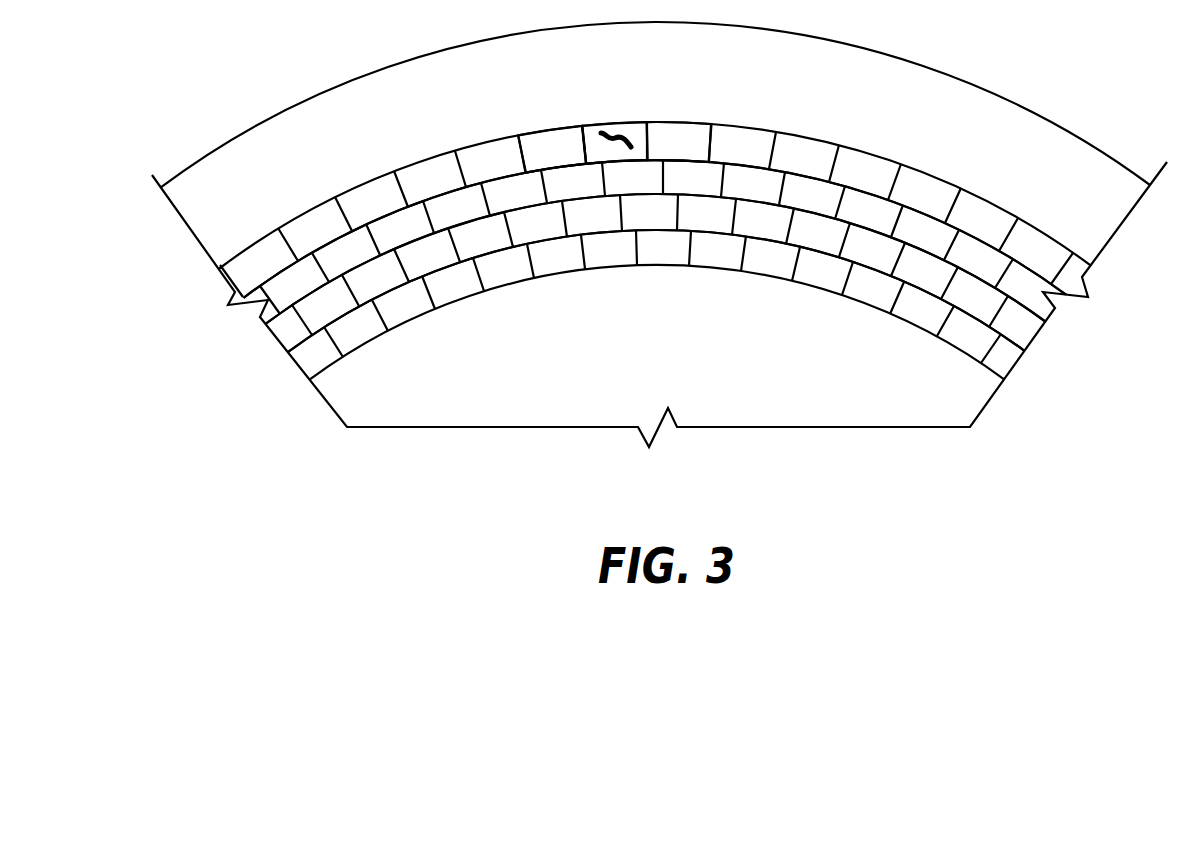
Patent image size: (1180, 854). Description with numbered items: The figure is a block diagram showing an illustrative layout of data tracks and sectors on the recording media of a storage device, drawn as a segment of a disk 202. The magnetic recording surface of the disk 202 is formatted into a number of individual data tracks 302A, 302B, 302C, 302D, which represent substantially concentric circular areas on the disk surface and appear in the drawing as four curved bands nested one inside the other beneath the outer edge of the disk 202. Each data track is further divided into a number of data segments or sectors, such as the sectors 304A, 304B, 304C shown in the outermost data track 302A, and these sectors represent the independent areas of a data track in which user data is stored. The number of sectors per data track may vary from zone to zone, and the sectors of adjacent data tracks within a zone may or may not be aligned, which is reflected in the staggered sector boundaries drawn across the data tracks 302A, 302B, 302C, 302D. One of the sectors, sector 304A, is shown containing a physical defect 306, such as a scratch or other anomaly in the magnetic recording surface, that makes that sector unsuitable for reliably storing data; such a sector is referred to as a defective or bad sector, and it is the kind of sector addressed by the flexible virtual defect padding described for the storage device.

The disk 202 is at (700, 74).
The data track 302A is at (1102, 283).
The data track 302B is at (1075, 312).
The data track 302C is at (1052, 345).
The data track 302D is at (1036, 378).
The sector 304A is at (637, 112).
The sector 304B is at (573, 158).
The sector 304C is at (703, 153).
The physical defect 306 is at (610, 133).